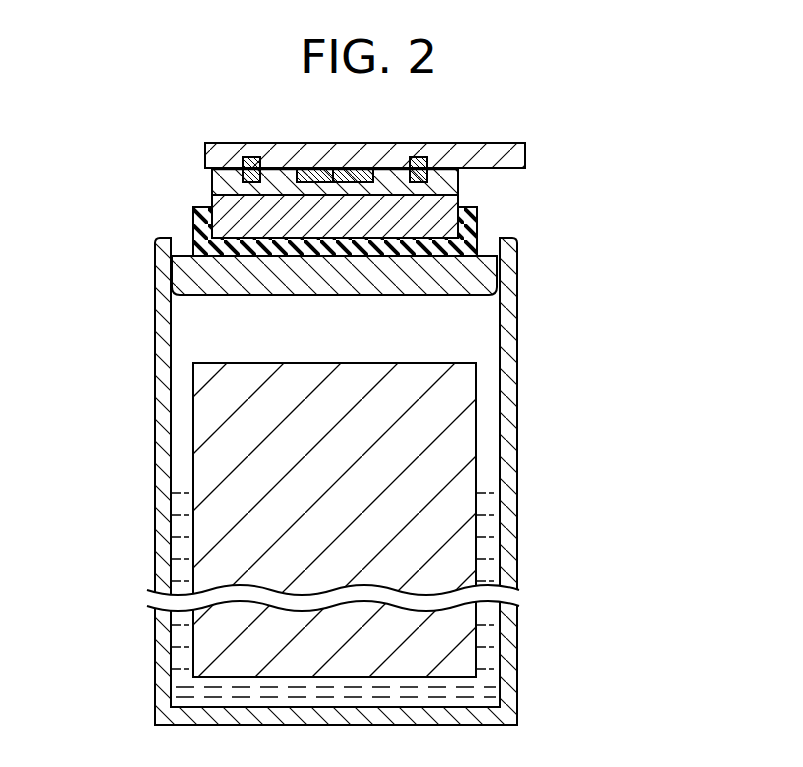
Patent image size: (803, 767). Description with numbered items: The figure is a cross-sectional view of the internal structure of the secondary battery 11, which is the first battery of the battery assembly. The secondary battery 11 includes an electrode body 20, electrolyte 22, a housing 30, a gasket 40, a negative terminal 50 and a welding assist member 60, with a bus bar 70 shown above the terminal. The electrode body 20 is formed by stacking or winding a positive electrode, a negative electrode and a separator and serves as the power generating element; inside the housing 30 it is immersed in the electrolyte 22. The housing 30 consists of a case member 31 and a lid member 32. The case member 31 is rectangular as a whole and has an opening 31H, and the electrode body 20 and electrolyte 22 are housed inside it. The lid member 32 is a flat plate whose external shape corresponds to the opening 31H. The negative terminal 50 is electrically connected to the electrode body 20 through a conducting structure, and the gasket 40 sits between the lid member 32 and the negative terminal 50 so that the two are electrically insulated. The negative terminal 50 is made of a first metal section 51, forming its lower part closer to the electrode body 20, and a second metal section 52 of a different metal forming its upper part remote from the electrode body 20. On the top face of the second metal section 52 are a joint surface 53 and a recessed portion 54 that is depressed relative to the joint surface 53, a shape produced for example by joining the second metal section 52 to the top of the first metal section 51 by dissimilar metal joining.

The secondary battery 11 is at (131, 181).
The electrode body 20 is at (311, 456).
The electrolyte 22 is at (183, 535).
The housing 30 is at (96, 268).
The case member 31 is at (163, 340).
The opening 31H is at (178, 238).
The lid member 32 is at (207, 280).
The gasket 40 is at (452, 250).
The negative terminal 50 is at (586, 180).
The first metal section 51 is at (438, 218).
The second metal section 52 is at (438, 180).
The joint surface 53 is at (288, 168).
The recessed portion 54 is at (338, 168).
The welding assist member 60 is at (358, 170).
The bus bar 70 is at (493, 157).